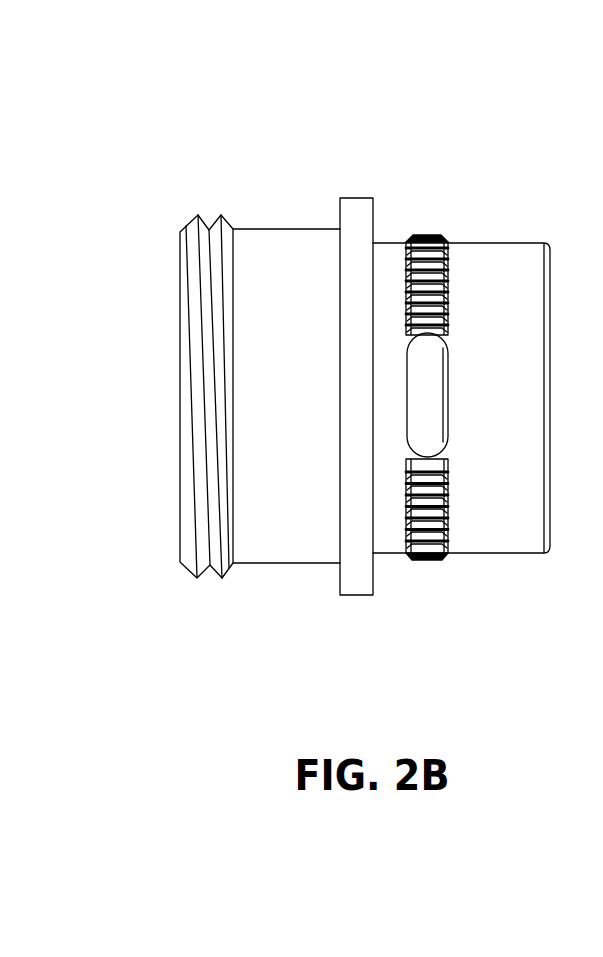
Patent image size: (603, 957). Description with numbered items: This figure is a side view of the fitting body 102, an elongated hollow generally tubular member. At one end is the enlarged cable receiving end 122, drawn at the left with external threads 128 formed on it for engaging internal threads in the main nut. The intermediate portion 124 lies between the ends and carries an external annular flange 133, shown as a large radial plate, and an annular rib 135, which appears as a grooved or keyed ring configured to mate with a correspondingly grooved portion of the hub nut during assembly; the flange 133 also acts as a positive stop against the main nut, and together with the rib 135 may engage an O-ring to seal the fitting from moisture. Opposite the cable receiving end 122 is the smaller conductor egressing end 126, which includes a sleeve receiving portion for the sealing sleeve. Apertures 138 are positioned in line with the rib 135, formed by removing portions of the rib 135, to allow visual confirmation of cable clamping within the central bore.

The fitting body 102 is at (396, 140).
The cable receiving end 122 is at (186, 198).
The intermediate portion 124 is at (351, 620).
The conductor egressing end 126 is at (529, 208).
The external threads 128 is at (188, 490).
The external annular flange 133 is at (352, 233).
The annular rib 135 is at (435, 232).
The apertures 138 is at (437, 408).